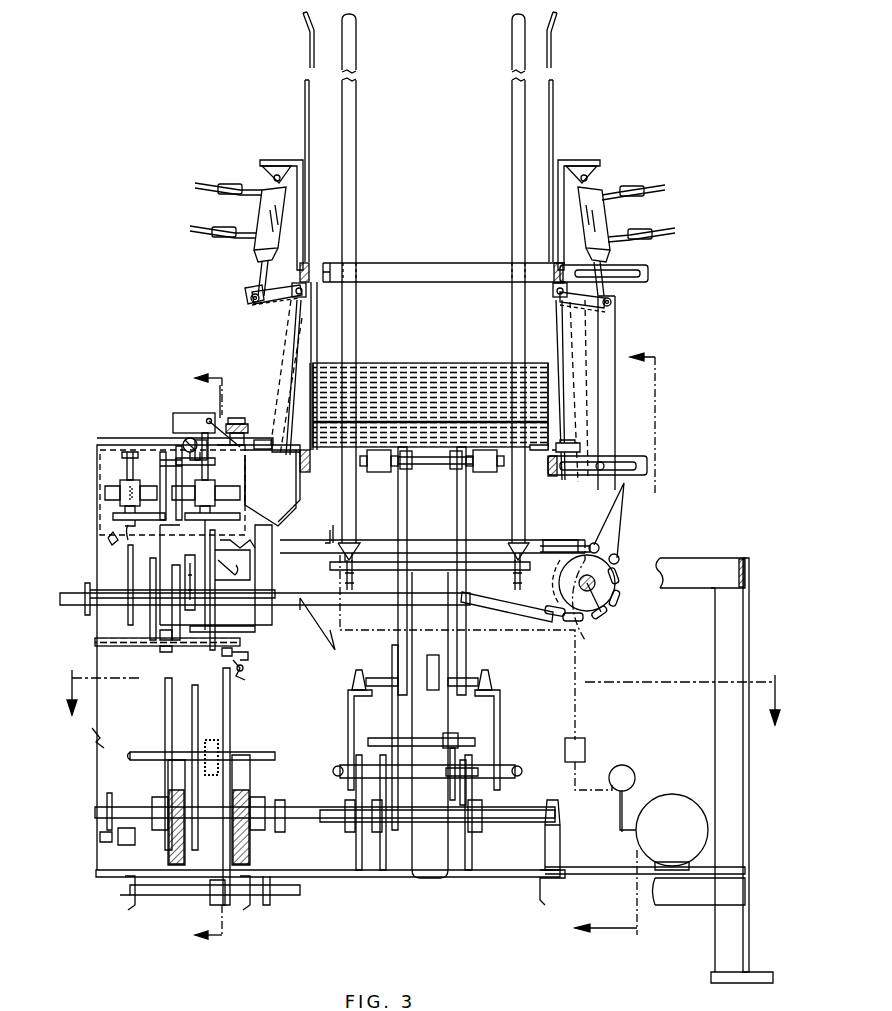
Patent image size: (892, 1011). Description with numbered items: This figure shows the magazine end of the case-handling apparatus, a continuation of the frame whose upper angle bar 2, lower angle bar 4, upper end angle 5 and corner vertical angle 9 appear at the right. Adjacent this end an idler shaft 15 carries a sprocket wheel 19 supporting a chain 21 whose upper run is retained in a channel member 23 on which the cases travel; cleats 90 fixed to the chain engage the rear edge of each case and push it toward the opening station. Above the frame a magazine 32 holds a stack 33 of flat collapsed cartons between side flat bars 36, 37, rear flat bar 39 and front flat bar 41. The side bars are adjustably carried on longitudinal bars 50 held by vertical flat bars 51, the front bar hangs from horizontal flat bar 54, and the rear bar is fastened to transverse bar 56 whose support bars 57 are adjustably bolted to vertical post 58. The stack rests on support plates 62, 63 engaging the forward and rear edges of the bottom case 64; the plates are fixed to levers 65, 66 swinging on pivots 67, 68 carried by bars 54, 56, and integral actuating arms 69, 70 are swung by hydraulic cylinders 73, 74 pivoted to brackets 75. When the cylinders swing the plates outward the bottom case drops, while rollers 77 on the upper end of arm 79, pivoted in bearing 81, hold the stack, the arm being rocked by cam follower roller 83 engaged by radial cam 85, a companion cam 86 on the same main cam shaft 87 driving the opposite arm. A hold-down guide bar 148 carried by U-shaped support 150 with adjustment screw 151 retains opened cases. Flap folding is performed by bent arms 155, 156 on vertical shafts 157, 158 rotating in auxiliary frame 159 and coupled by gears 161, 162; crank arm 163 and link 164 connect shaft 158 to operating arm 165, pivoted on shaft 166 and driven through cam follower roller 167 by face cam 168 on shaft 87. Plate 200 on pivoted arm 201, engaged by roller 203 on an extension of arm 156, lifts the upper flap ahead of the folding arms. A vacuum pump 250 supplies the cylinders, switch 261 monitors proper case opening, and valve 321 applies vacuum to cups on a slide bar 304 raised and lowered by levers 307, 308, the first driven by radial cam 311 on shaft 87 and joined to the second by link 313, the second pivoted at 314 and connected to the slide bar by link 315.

The upper longitudinally extending angle bar 2 is at (677, 558).
The lower longitudinally extending angle bar 4 is at (614, 642).
The upper end angle 5 is at (733, 558).
The vertical angle 9 is at (425, 712).
The idler shaft 15 is at (603, 608).
The sprocket wheel 19 is at (612, 588).
The chain 21 is at (586, 621).
The channel member 23 is at (551, 540).
The magazine 32 is at (566, 76).
The stack of flat collapsed cartons 33 is at (445, 363).
The flat bar 36 is at (356, 176).
The flat bar 37 is at (512, 175).
The rear flat bar 39 is at (554, 96).
The front flat bar 41 is at (305, 96).
The longitudinally extending bar 50 is at (409, 263).
The vertical flat bar 51 is at (333, 520).
The horizontally extending flat bar 54 is at (312, 262).
The transverse bar 56 is at (554, 262).
The support bar 57 is at (641, 283).
The vertical post 58 is at (600, 411).
The support plate 62 is at (306, 465).
The support plate 63 is at (540, 452).
The bottom case 64 is at (440, 464).
The lever 65 is at (299, 365).
The lever 66 is at (557, 360).
The pivot 67 is at (297, 285).
The pivot 68 is at (553, 294).
The actuating arm 69 is at (258, 306).
The actuating arm 70 is at (586, 306).
The hydraulic cylinder 73 is at (256, 219).
The hydraulic cylinder 74 is at (604, 221).
The bracket 75 is at (278, 160).
The rollers 77 is at (378, 472).
The arm 79 is at (457, 523).
The bearing 81 is at (361, 672).
The cam follower roller 83 is at (392, 826).
The radial cam 85 is at (416, 470).
The radial cam 86 is at (472, 845).
The cam shaft 87 is at (325, 822).
The cleat 90 is at (620, 514).
The hold down guide bar 148 is at (124, 438).
The U-shaped support 150 is at (262, 440).
The adjustment screw 151 is at (236, 418).
The bent arm 155 is at (110, 493).
The bent arm 156 is at (230, 482).
The vertically disposed shaft 157 is at (120, 562).
The vertically disposed shaft 158 is at (250, 576).
The auxiliary frame 159 is at (245, 632).
The gear 161 is at (108, 647).
The gear 162 is at (172, 648).
The crank arm 163 is at (248, 658).
The link 164 is at (242, 677).
The operating arm 165 is at (231, 737).
The shaft 166 is at (160, 895).
The cam follower roller 167 is at (225, 822).
The face cam 168 is at (250, 780).
The flap-raising plate 200 is at (160, 462).
The arm 201 is at (200, 470).
The roller 203 is at (185, 441).
The vacuum pump 250 is at (650, 851).
The switch 261 is at (206, 419).
The slide bar 304 is at (416, 625).
The lever 307 is at (466, 868).
The lever 308 is at (450, 760).
The radial cam 311 is at (357, 868).
The link 313 is at (462, 766).
The pivot 314 is at (460, 735).
The link 315 is at (398, 712).
The valve 321 is at (585, 752).